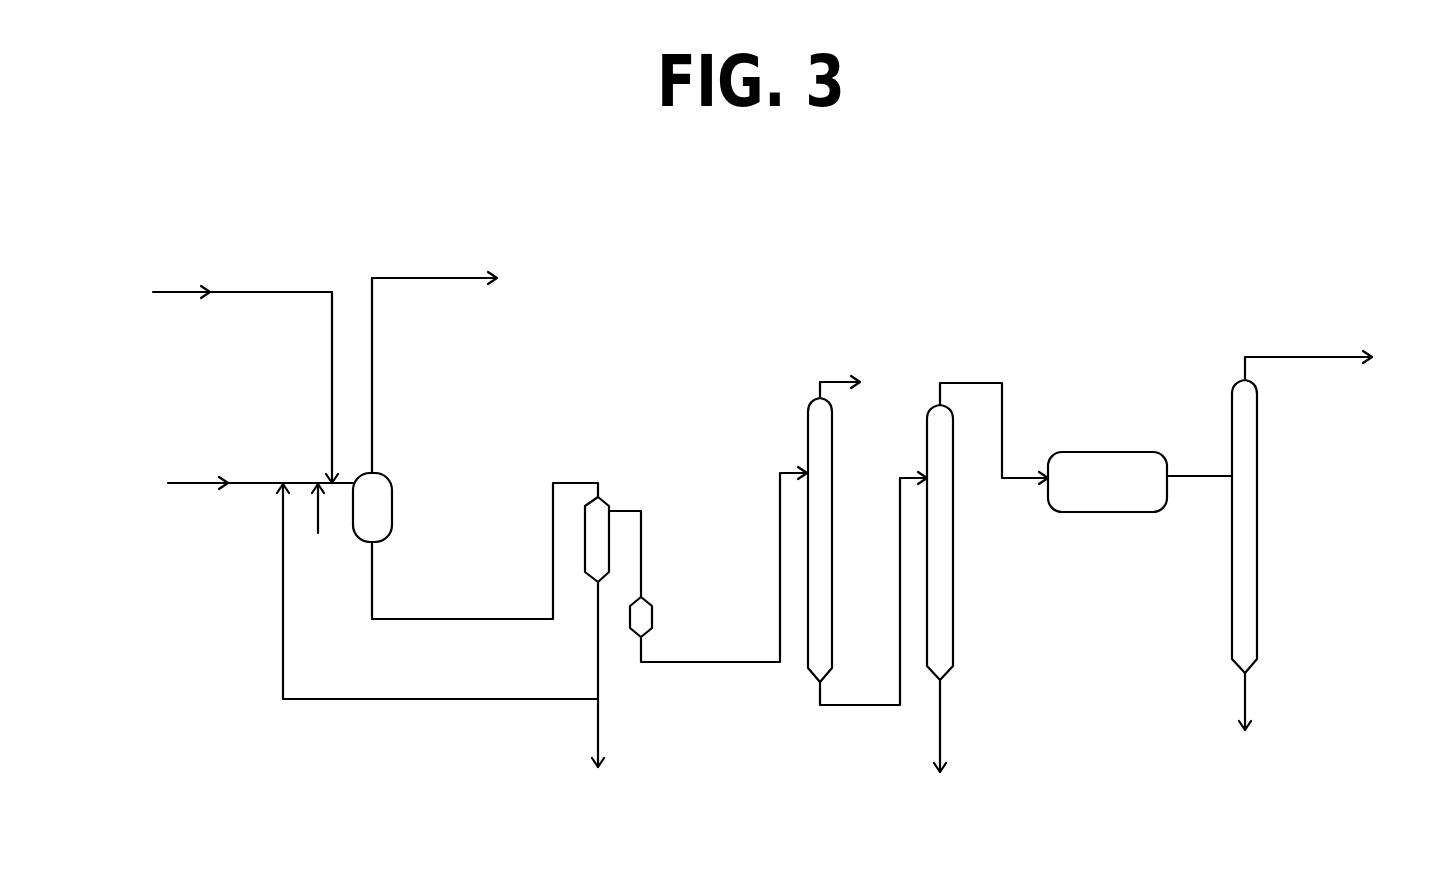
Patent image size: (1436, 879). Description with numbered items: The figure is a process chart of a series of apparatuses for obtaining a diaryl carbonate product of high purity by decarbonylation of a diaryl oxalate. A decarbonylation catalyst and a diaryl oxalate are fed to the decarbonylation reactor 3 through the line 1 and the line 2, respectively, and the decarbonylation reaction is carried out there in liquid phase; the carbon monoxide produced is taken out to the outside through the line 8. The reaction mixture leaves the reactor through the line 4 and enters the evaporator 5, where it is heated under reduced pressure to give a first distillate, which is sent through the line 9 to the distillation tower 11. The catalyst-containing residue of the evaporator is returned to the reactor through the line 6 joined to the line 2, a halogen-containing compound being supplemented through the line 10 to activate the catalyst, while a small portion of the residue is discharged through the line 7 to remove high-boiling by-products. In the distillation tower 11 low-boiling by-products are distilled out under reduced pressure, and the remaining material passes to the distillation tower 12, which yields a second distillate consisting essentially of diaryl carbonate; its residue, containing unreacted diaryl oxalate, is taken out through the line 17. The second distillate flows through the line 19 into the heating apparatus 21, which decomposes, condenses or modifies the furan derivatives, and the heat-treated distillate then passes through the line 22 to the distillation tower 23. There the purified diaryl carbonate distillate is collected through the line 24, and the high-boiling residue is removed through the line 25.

The line 1 is at (245, 368).
The line 2 is at (260, 467).
The decarbonylation reactor 3 is at (397, 507).
The line 4 is at (485, 572).
The evaporator 5 is at (610, 525).
The line 6 is at (437, 611).
The line 7 is at (599, 694).
The line 8 is at (435, 355).
The line 9 is at (708, 585).
The line 10 is at (319, 529).
The distillation tower 11 is at (811, 526).
The distillation tower 12 is at (886, 540).
The line 17 is at (943, 745).
The line 19 is at (994, 455).
The heating apparatus 21 is at (1107, 465).
The line 22 is at (1199, 497).
The distillation tower 23 is at (1272, 526).
The line 24 is at (1335, 364).
The line 25 is at (1251, 720).